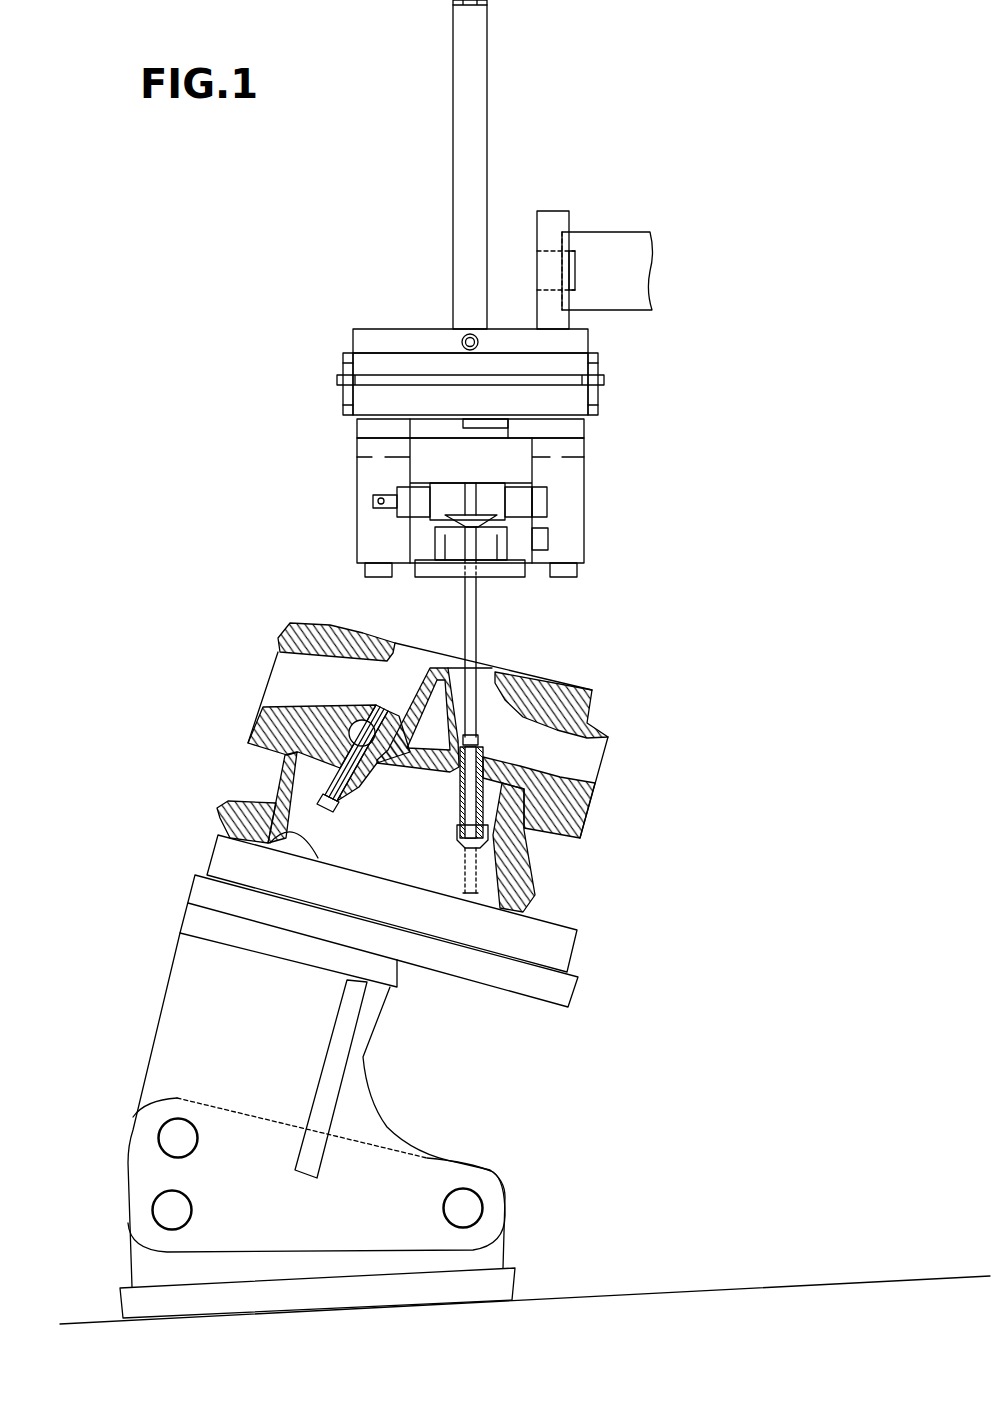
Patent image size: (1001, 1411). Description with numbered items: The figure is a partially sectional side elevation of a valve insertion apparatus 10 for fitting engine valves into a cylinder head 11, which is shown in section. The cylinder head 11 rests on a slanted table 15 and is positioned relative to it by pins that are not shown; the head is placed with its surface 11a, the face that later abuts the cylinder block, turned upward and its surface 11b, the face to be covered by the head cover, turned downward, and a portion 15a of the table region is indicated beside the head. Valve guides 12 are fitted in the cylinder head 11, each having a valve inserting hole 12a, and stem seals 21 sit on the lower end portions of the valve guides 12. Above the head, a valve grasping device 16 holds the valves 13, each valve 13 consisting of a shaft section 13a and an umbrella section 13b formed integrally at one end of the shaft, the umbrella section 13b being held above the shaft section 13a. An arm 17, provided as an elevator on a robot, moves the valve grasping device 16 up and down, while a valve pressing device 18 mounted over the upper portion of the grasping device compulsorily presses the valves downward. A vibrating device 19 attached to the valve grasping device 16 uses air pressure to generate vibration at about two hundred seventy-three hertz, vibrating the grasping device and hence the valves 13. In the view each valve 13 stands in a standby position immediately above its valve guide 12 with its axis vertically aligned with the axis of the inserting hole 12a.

The valve insertion apparatus 10 is at (125, 256).
The cylinder head 11 is at (262, 667).
The surface to be abutted against a cylinder block 11a is at (557, 670).
The surface to be covered with a head cover 11b is at (560, 925).
The valve guide 12 is at (360, 741).
The valve inserting hole 12a is at (363, 707).
The valve 13 is at (444, 611).
The shaft section 13a is at (478, 632).
The umbrella section 13b is at (497, 517).
The slanted table 15 is at (192, 990).
The positioning portion 15a is at (237, 830).
The valve grasping device 16 is at (346, 482).
The arm 17 is at (612, 242).
The valve pressing device 18 is at (442, 141).
The vibrating device 19 is at (549, 538).
The stem seal 21 is at (323, 788).